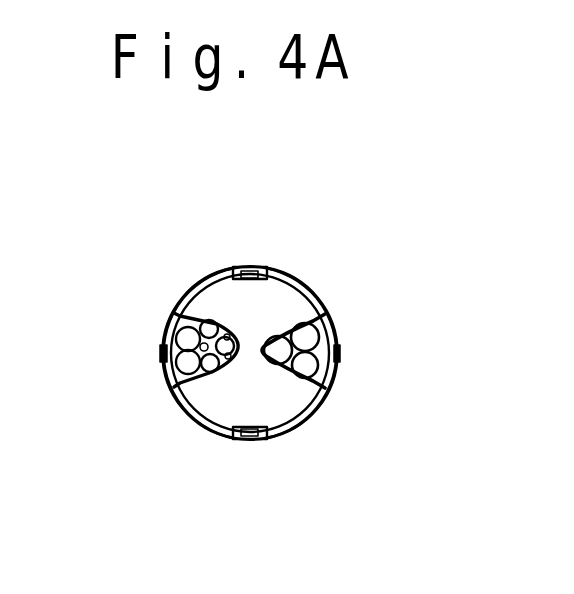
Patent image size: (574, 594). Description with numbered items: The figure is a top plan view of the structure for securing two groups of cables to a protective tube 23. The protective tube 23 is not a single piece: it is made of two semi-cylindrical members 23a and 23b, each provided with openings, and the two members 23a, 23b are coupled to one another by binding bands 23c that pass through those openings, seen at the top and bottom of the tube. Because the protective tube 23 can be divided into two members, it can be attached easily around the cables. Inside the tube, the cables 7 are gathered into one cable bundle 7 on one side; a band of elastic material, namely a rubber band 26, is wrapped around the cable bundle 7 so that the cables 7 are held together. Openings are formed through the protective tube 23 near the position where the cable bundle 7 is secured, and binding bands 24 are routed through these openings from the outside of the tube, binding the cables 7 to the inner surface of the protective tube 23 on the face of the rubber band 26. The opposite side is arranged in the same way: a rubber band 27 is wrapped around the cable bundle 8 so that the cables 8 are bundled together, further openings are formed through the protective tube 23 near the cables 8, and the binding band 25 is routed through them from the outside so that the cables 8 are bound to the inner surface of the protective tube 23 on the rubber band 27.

The protective tube 23 is at (347, 194).
The semi-cylindrical member 23a is at (215, 277).
The semi-cylindrical member 23b is at (287, 277).
The binding band 23c is at (250, 268).
The binding band 24 is at (167, 328).
The binding band 25 is at (334, 330).
The rubber band 26 is at (183, 408).
The rubber band 27 is at (285, 382).
The cable bundle 7 is at (188, 367).
The cable bundle 8 is at (312, 370).